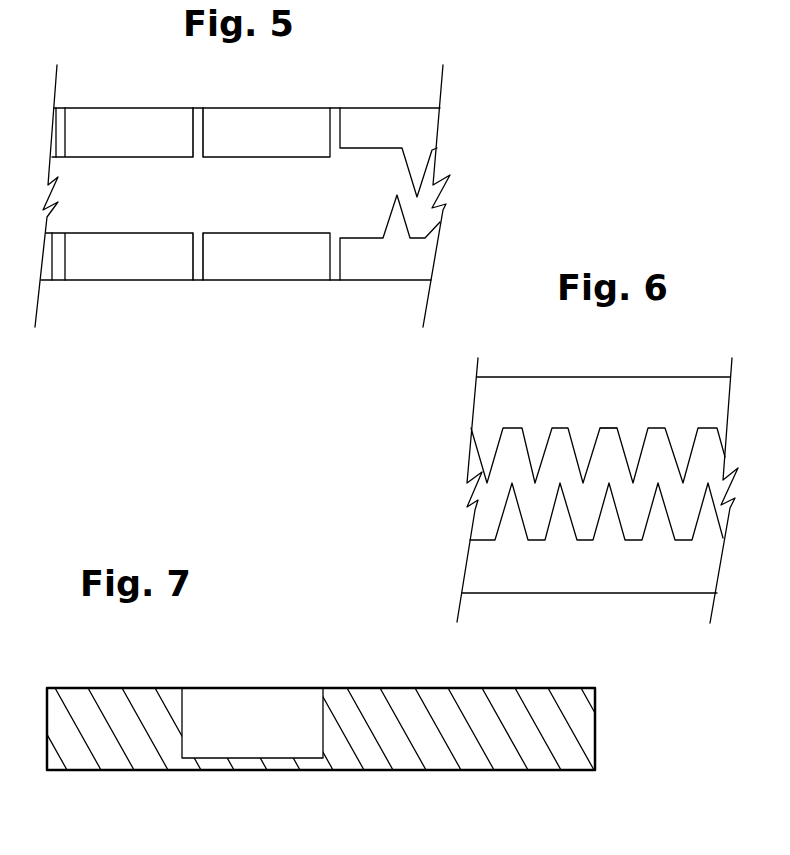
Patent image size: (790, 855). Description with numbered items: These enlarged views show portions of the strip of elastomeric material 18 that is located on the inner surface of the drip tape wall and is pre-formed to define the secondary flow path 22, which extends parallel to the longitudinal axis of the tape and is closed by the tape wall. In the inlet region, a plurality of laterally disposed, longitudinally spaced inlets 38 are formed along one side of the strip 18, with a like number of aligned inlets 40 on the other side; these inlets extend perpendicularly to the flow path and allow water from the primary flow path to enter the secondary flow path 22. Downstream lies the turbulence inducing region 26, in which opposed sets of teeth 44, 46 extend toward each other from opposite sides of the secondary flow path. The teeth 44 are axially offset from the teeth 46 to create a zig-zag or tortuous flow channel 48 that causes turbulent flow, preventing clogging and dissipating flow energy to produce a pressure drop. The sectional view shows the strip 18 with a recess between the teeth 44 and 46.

In FIG. 5, the strip of elastomeric material 18 is at (242, 275).
In FIG. 6, the strip of elastomeric material 18 is at (515, 383).
In FIG. 7, the strip of elastomeric material 18 is at (233, 795).
In FIG. 5, the secondary flow path 22 is at (368, 100).
In FIG. 6, the turbulence inducing region 26 is at (687, 367).
In FIG. 5, the inlets 38 is at (198, 152).
In FIG. 5, the inlets 40 is at (198, 232).
In FIG. 6, the teeth 44 is at (535, 445).
In FIG. 7, the teeth 44 is at (335, 692).
In FIG. 6, the teeth 46 is at (558, 517).
In FIG. 7, the teeth 46 is at (247, 707).
In FIG. 6, the tortuous flow channel 48 is at (615, 455).